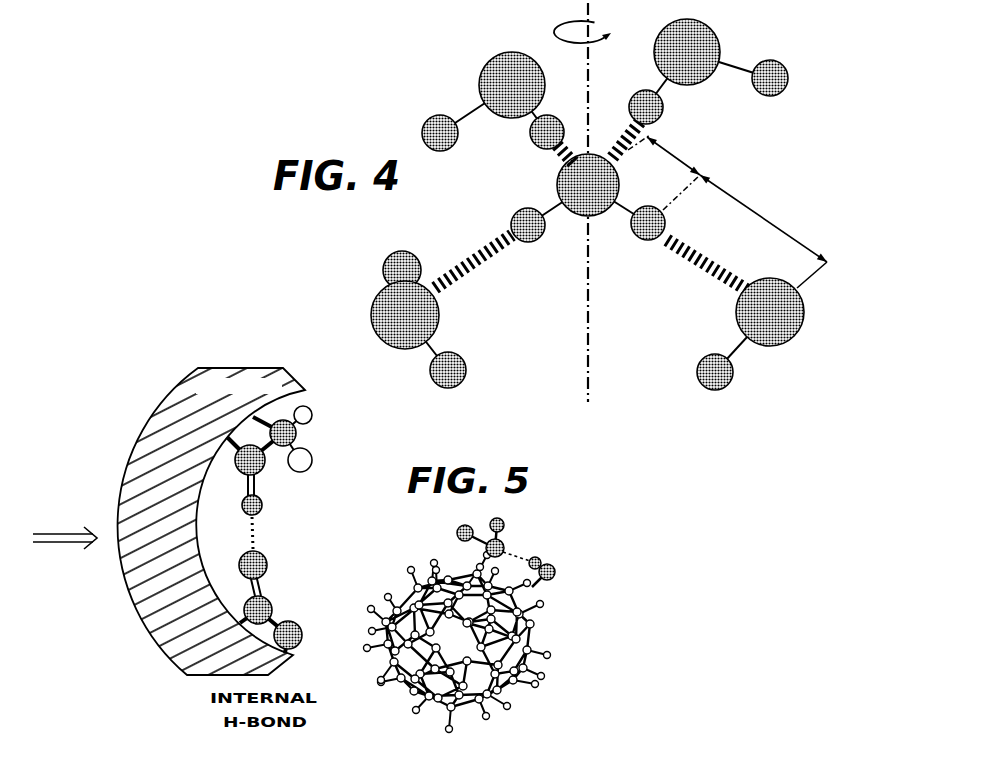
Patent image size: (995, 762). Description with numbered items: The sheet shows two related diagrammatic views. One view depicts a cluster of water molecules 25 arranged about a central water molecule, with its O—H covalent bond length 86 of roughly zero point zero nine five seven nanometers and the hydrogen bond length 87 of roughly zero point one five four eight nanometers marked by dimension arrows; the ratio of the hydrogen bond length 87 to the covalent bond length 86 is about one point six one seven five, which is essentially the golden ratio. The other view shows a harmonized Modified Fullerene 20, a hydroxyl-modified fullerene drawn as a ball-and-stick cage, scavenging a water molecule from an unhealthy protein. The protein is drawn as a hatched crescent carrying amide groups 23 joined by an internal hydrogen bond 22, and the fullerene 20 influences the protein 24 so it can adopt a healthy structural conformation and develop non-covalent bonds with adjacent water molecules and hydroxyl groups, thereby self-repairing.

In FIG. 5, the harmonized Modified Fullerene 20 is at (575, 622).
In FIG. 5, the internal hydrogen bond 22 is at (270, 527).
In FIG. 5, the amide (peptide) group 23 is at (320, 391).
In FIG. 5, the protein 24 is at (153, 458).
In FIG. 4, the cluster of water molecules 25 is at (435, 85).
In FIG. 4, the covalent bond length 86 is at (713, 100).
In FIG. 4, the hydrogen bond length 87 is at (765, 185).